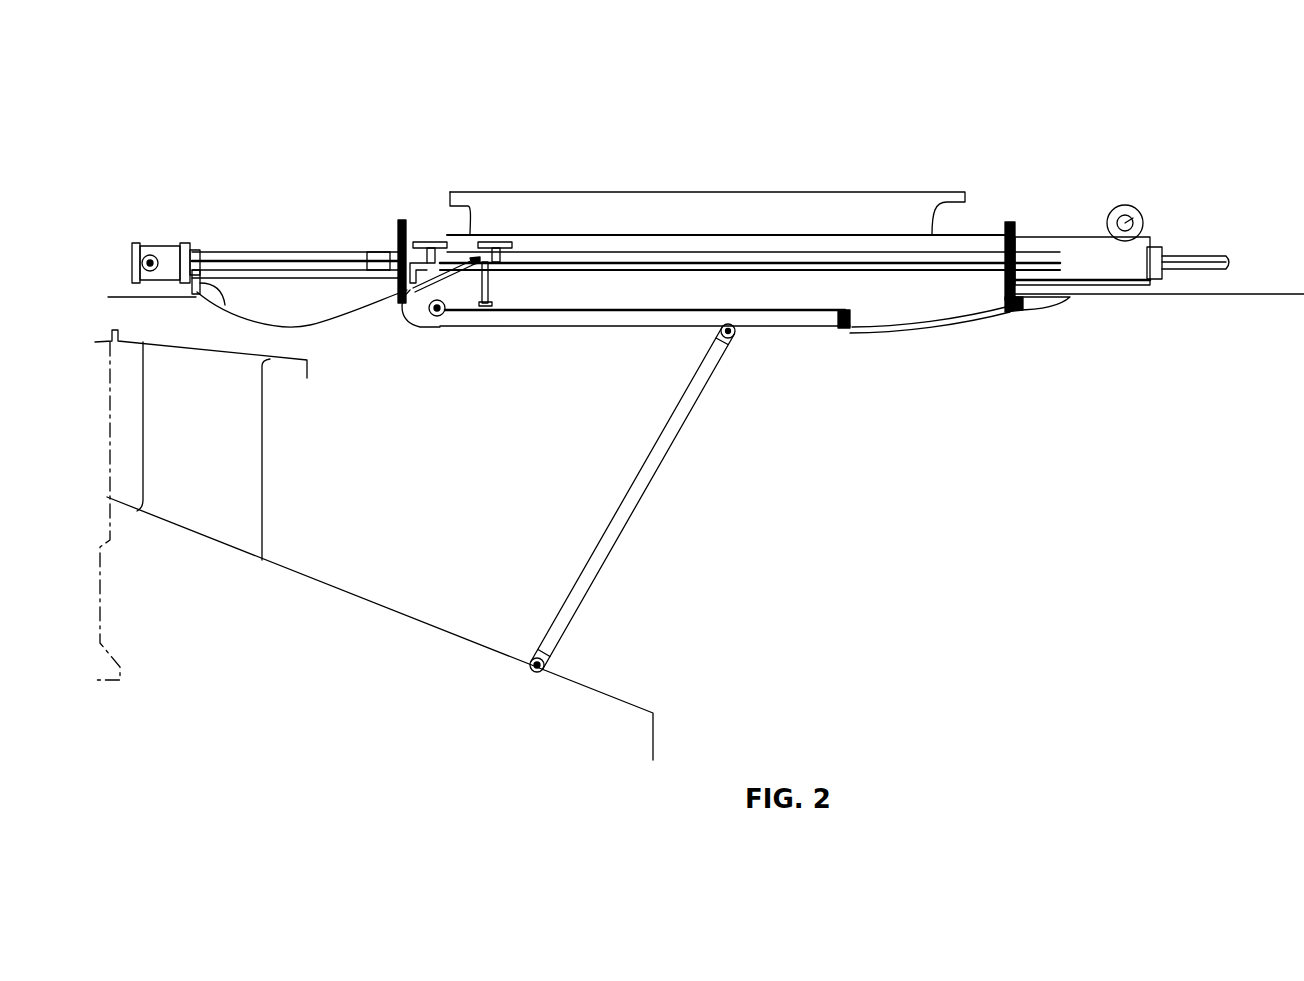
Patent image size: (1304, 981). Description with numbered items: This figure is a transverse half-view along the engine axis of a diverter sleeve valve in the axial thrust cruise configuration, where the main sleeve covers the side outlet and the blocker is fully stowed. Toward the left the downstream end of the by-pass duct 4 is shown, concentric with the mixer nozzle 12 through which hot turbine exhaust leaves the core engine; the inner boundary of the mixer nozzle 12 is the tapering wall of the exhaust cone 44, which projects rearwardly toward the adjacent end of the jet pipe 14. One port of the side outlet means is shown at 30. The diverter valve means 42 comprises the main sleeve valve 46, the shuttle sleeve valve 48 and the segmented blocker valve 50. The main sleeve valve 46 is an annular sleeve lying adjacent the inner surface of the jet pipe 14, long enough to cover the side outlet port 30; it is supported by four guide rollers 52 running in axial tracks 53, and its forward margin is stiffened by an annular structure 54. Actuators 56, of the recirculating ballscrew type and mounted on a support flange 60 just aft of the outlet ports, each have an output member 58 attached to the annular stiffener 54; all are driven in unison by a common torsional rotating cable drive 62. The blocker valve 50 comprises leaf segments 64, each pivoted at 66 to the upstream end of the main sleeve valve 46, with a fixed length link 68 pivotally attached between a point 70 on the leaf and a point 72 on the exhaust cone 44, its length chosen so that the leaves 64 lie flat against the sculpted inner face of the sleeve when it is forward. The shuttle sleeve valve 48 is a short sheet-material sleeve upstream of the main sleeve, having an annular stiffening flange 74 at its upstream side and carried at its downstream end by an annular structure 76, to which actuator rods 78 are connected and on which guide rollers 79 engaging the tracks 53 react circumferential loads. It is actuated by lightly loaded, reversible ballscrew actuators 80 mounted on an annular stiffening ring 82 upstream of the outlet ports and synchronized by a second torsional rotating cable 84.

The downstream end of the by-pass duct 4 is at (168, 334).
The mixer nozzle 12 is at (300, 443).
The jet pipe 14 is at (1198, 295).
The side outlet port 30 is at (744, 172).
The diverter valve means 42 is at (877, 455).
The exhaust cone 44 is at (397, 626).
The main sleeve valve 46 is at (833, 292).
The shuttle sleeve valve 48 is at (318, 300).
The blocker valve 50 is at (631, 352).
The guide roller 52 is at (506, 238).
The axial track 53 is at (655, 242).
The annular stiffening structure 54 is at (488, 277).
The actuator 56 is at (1078, 252).
The output member 58 is at (820, 257).
The support flange 60 is at (1008, 220).
The torsional rotating cable drive 62 is at (1142, 212).
The leaf segment 64 is at (573, 327).
The leaf pivot 66 is at (433, 317).
The fixed length link 68 is at (617, 500).
The link pivot point on leaf 70 is at (736, 337).
The link pivot point on exhaust cone 72 is at (530, 668).
The annular stiffening flange 74 is at (218, 292).
The annular structure 76 is at (403, 303).
The actuator rod 78 is at (420, 241).
The guide roller 79 is at (442, 240).
The ballscrew actuator 80 is at (237, 250).
The annular stiffening ring 82 is at (395, 228).
The second torsional rotating cable 84 is at (150, 258).